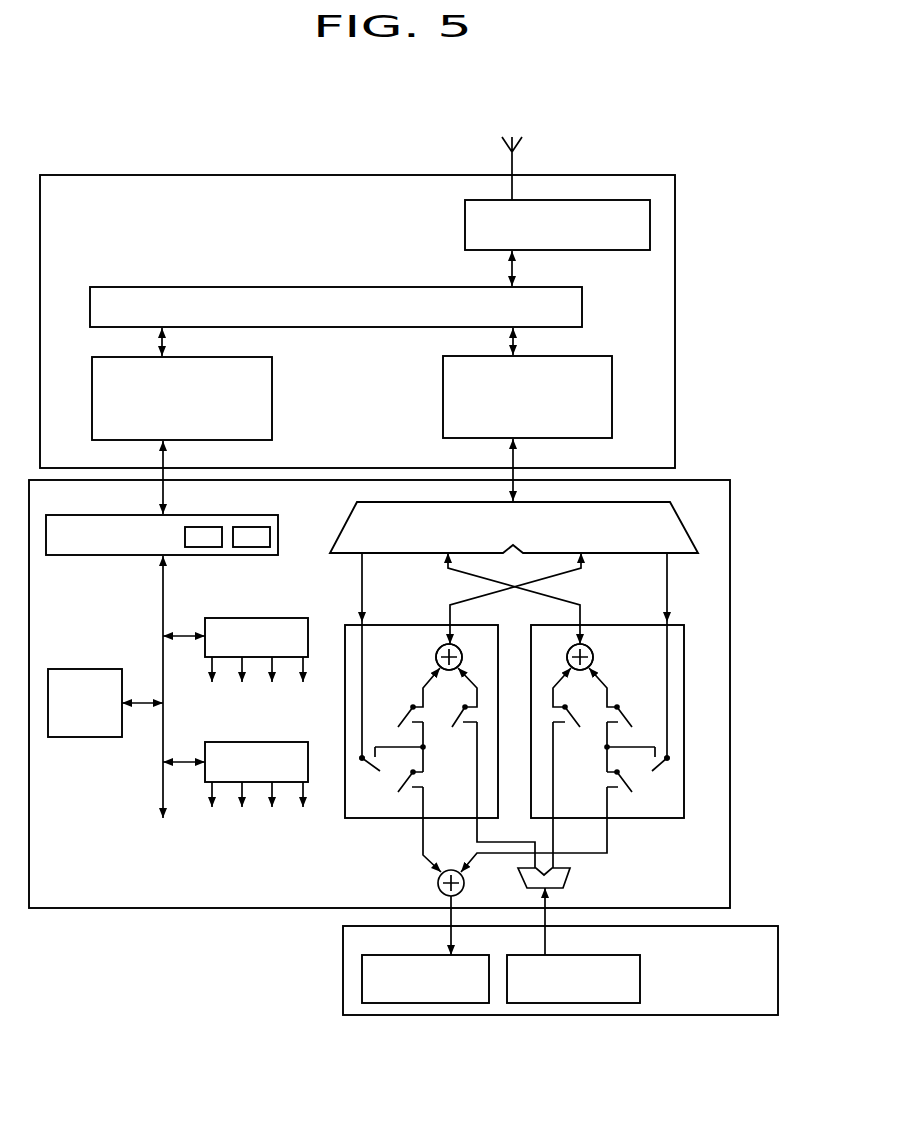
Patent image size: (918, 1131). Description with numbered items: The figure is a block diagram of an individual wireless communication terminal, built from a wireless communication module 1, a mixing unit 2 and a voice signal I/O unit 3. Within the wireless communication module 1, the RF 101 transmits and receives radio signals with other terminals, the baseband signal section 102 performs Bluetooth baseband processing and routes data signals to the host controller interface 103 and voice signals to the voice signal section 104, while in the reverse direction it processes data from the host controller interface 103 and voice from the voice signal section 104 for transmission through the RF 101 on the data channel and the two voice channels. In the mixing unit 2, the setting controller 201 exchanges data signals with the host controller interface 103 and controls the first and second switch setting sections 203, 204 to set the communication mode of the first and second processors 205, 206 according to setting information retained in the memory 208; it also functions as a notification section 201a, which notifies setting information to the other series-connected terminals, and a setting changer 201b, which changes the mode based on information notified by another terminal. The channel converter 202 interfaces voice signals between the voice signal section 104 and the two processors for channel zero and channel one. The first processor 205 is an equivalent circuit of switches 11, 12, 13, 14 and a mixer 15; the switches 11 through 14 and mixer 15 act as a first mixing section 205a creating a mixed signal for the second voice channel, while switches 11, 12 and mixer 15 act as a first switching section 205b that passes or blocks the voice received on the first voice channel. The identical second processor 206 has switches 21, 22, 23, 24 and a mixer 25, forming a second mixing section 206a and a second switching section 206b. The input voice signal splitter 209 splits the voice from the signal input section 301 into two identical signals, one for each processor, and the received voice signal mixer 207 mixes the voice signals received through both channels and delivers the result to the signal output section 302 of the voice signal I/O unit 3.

The wireless communication module 1 is at (313, 175).
The RF 101 is at (465, 234).
The baseband signal section 102 is at (388, 287).
The host controller interface 103 is at (272, 398).
The voice signal section 104 is at (443, 402).
The mixing unit 2 is at (163, 910).
The setting controller 201 is at (110, 556).
The notification section 201a is at (207, 548).
The setting changer 201b is at (272, 532).
The channel converter 202 is at (690, 555).
The first switch setting section 203 is at (270, 748).
The second switch setting section 204 is at (255, 624).
The first processor 205 is at (368, 820).
The first mixing section 205a is at (440, 646).
The first switching section 205b is at (362, 762).
The second processor 206 is at (658, 820).
The second mixing section 206a is at (590, 645).
The second switching section 206b is at (665, 764).
The received voice signal mixer 207 is at (438, 884).
The memory 208 is at (82, 742).
The input voice signal splitter 209 is at (572, 878).
The voice signal I/O unit 3 is at (343, 972).
The signal input section 301 is at (541, 1004).
The signal output section 302 is at (421, 1004).
The switch 11 is at (363, 765).
The switch 12 is at (402, 790).
The switch 13 is at (408, 715).
The switch 14 is at (446, 723).
The mixer 15 is at (438, 656).
The switch 21 is at (656, 768).
The switch 22 is at (632, 782).
The switch 23 is at (627, 720).
The switch 24 is at (597, 718).
The mixer 25 is at (597, 653).